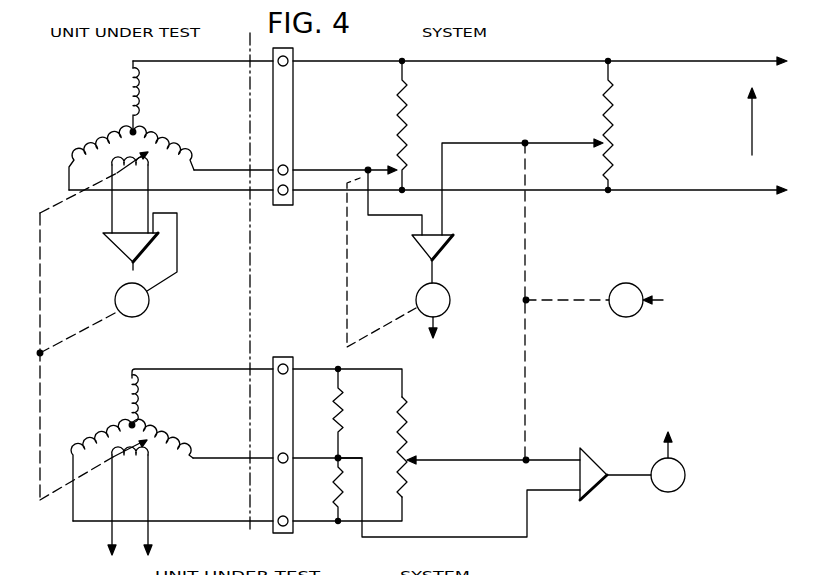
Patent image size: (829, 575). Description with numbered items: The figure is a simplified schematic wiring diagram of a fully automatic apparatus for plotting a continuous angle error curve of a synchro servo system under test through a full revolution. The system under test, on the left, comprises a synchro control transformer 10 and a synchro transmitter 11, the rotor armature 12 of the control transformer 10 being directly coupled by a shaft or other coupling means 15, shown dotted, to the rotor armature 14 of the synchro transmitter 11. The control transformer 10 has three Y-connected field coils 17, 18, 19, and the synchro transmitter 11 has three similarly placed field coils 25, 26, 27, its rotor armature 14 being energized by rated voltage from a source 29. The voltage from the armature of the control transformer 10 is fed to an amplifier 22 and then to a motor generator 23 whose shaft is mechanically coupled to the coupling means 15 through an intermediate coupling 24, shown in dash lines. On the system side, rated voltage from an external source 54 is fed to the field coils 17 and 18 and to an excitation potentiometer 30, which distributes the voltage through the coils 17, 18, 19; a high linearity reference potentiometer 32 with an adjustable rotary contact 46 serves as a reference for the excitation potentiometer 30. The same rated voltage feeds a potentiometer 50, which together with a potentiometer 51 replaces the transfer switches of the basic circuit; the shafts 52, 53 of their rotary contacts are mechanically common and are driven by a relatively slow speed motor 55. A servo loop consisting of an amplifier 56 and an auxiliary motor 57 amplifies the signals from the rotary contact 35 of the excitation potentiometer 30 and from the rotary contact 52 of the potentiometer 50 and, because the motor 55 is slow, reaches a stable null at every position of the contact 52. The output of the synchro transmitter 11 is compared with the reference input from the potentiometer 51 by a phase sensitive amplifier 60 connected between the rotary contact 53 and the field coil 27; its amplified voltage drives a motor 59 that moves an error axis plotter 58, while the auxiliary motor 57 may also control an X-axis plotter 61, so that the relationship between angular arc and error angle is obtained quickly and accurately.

The synchro control transformer 10 is at (139, 127).
The synchro transmitter 11 is at (139, 419).
The rotor armature 12 is at (150, 162).
The rotor armature 14 is at (150, 460).
The coupling means 15 is at (40, 252).
The field coil 17 is at (129, 95).
The field coil 18 is at (113, 134).
The field coil 19 is at (168, 147).
The amplifier 22 is at (122, 248).
The motor generator 23 is at (149, 306).
The intermediate coupling 24 is at (72, 333).
The field coil 25 is at (127, 392).
The field coil 26 is at (105, 432).
The field coil 27 is at (167, 440).
The source 29 is at (125, 552).
The excitation potentiometer 30 is at (396, 112).
The reference potentiometer 32 is at (338, 425).
The rotary contact 35 is at (383, 166).
The adjustable rotary contact 46 is at (348, 457).
The potentiometer 50 is at (612, 110).
The potentiometer 51 is at (404, 407).
The rotary contact shaft 52 is at (551, 146).
The rotary contact shaft 53 is at (452, 460).
The external source 54 is at (751, 130).
The slow speed motor 55 is at (628, 317).
The amplifier 56 is at (445, 245).
The auxiliary motor 57 is at (438, 284).
The error axis plotter 58 is at (672, 445).
The motor 59 is at (685, 486).
The phase sensitive amplifier 60 is at (593, 462).
The X-axis plotter 61 is at (436, 331).